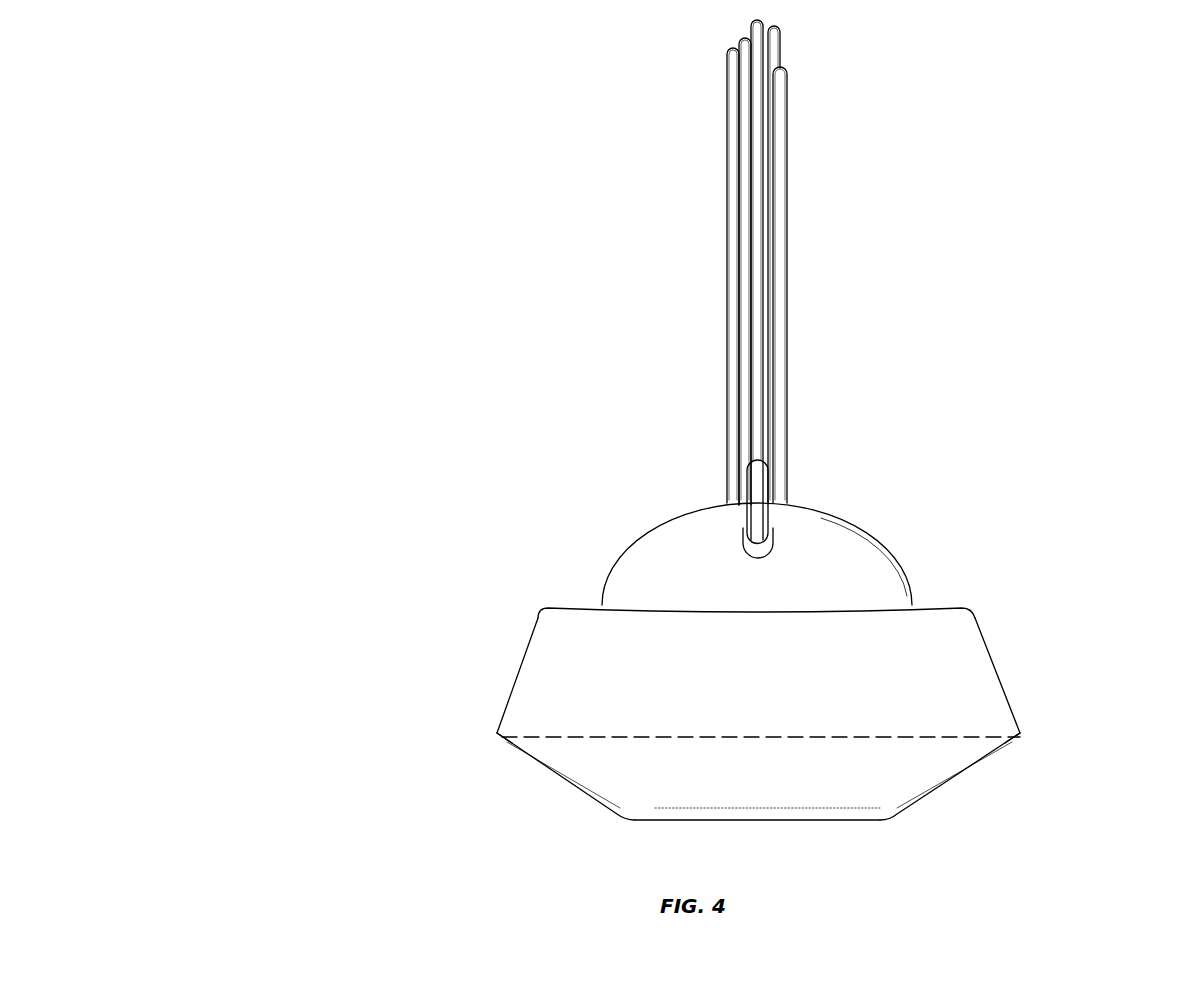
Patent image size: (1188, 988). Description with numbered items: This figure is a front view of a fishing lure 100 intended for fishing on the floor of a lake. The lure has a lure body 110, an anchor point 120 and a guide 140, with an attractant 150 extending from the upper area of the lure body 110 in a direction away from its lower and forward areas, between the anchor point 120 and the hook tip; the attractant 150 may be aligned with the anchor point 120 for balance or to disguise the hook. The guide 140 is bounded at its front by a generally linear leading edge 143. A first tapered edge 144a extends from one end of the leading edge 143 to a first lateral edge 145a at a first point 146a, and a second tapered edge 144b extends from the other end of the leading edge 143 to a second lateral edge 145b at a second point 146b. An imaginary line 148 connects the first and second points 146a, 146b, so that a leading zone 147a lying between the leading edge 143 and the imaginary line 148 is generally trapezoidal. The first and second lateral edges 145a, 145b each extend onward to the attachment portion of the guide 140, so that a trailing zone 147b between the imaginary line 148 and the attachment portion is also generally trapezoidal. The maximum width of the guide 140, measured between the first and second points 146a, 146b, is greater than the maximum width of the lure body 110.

The fishing lure 100 is at (288, 82).
The attractant 150 is at (832, 195).
The lure body 110 is at (868, 513).
The anchor point 120 is at (730, 518).
The guide 140 is at (485, 652).
The first lateral edge 145a is at (510, 688).
The second lateral edge 145b is at (1007, 687).
The first point 146a is at (494, 735).
The second point 146b is at (1020, 737).
The first tapered edge 144a is at (535, 765).
The second tapered edge 144b is at (980, 763).
The leading edge 143 is at (827, 820).
The leading zone 147a is at (752, 787).
The trailing zone 147b is at (752, 686).
The imaginary line 148 is at (944, 737).